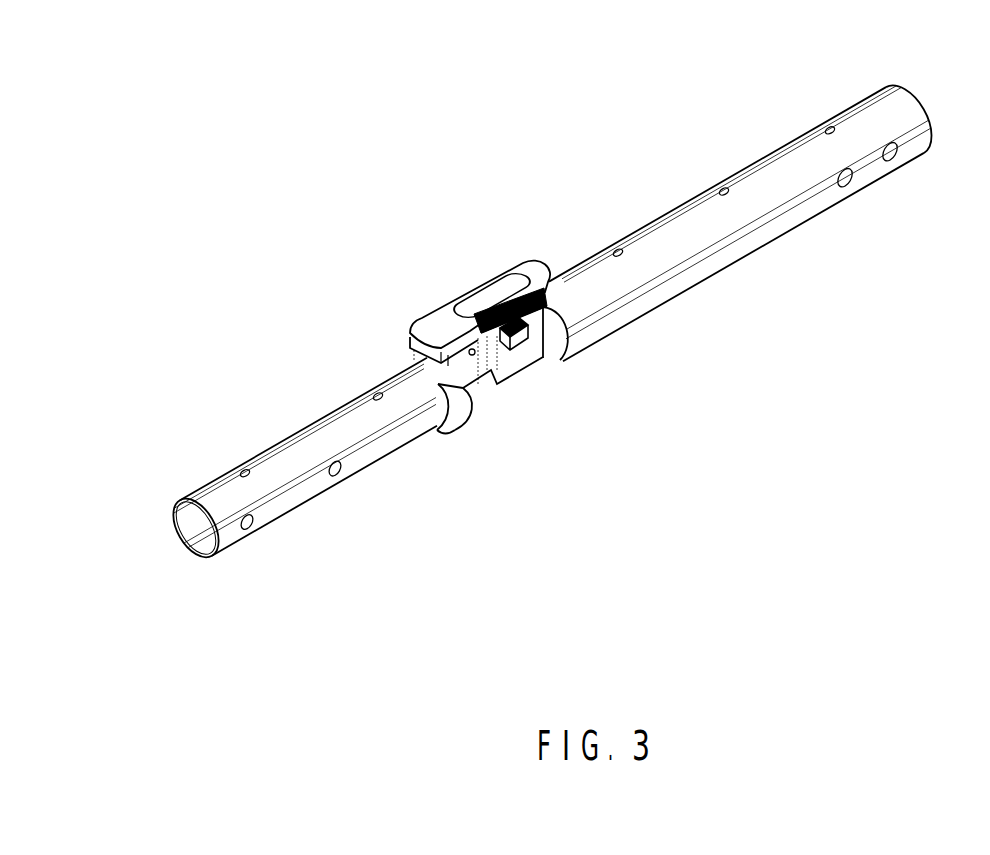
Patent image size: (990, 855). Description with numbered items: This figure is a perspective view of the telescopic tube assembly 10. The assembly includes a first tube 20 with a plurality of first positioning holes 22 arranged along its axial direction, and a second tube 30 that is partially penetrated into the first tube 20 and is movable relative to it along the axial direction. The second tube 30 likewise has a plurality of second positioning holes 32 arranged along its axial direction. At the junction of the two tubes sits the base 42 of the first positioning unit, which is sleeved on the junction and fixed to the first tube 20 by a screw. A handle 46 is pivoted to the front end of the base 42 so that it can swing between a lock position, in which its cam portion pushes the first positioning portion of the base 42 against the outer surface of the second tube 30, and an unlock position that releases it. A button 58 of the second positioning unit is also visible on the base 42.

The telescopic tube assembly 10 is at (548, 311).
The first tube 20 is at (732, 209).
The first positioning holes 22 is at (613, 250).
The second tube 30 is at (300, 429).
The second positioning holes 32 is at (379, 392).
The base 42 is at (477, 388).
The handle 46 is at (500, 288).
The button 58 is at (527, 346).